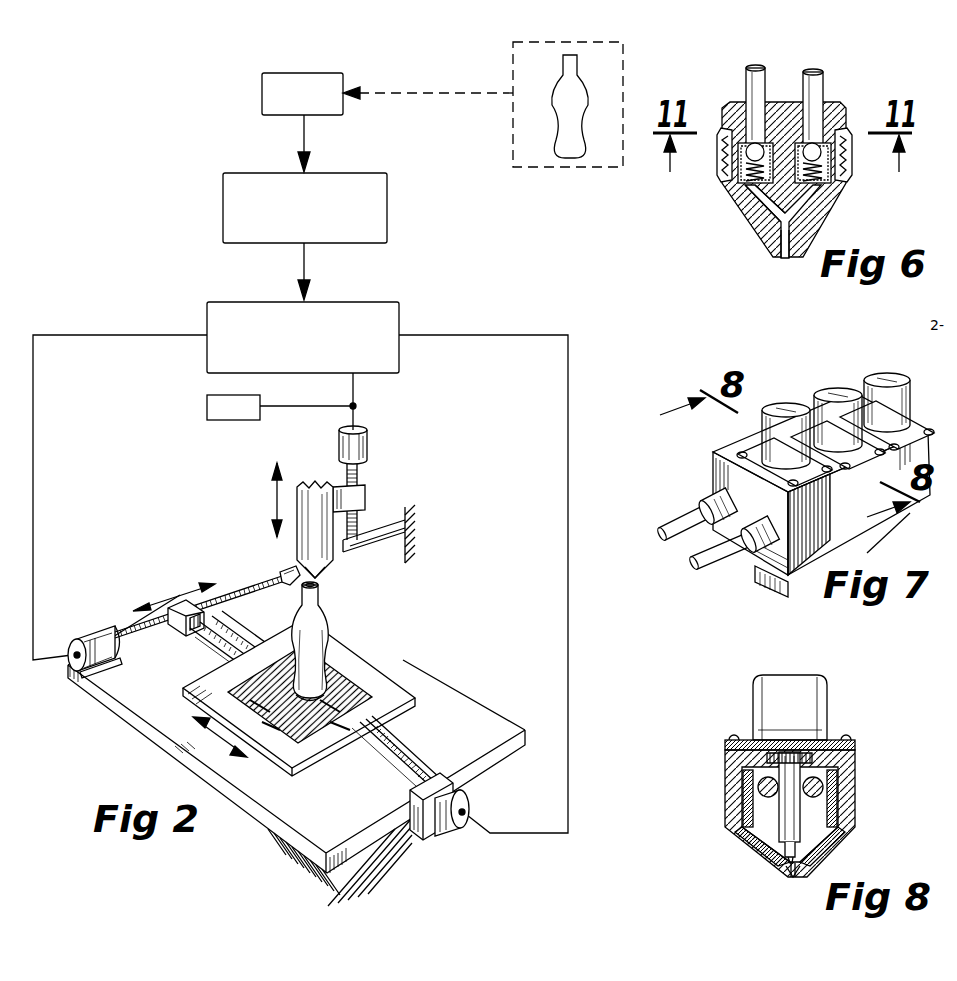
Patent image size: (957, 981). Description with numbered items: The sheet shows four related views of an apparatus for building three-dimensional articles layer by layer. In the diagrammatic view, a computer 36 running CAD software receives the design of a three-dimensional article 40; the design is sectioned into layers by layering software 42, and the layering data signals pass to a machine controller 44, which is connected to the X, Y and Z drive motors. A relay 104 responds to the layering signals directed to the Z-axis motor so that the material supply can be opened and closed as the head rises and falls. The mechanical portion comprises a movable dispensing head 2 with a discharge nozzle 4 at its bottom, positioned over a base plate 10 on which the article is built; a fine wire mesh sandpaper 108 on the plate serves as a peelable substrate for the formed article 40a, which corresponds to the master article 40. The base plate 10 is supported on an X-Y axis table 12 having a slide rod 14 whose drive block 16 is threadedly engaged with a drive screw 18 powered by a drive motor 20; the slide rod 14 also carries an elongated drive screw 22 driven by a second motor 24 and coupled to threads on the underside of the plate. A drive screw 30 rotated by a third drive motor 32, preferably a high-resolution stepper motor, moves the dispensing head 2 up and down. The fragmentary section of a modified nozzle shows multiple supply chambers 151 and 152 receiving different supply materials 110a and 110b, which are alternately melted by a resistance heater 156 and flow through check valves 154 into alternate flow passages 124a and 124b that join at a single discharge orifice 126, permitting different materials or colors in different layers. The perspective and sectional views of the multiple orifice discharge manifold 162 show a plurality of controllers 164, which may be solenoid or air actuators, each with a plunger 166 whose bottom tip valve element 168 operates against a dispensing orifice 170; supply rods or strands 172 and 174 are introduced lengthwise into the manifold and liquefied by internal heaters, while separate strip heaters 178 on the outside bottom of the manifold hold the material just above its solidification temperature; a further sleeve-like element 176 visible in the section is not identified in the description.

In FIG. 2, the dispensing head 2 is at (280, 548).
In FIG. 2, the discharge nozzle 4 is at (322, 566).
In FIG. 2, the base plate 10 is at (385, 686).
In FIG. 2, the X-Y axis table 12 is at (157, 733).
In FIG. 2, the slide rod 14 is at (205, 650).
In FIG. 2, the drive block 16 is at (200, 606).
In FIG. 2, the drive screw 18 is at (136, 636).
In FIG. 2, the drive motor 20 is at (86, 640).
In FIG. 2, the elongated drive screw 22 is at (397, 764).
In FIG. 2, the second motor 24 is at (457, 830).
In FIG. 2, the drive screw 30 is at (358, 476).
In FIG. 2, the third drive motor 32 is at (368, 447).
In FIG. 2, the computer 36 is at (262, 80).
In FIG. 2, the three-dimensional article 40 is at (562, 68).
In FIG. 2, the formed article 40a is at (320, 600).
In FIG. 2, the layering software 42 is at (223, 199).
In FIG. 2, the machine controller 44 is at (216, 302).
In FIG. 2, the relay 104 is at (207, 408).
In FIG. 2, the wire mesh sandpaper 108 is at (350, 692).
In FIG. 6, the supply material 110a is at (812, 74).
In FIG. 6, the supply material 110b is at (755, 68).
In FIG. 6, the flow passage 124a is at (805, 200).
In FIG. 6, the flow passage 124b is at (765, 215).
In FIG. 6, the discharge orifice 126 is at (786, 258).
In FIG. 6, the supply chamber 151 is at (750, 102).
In FIG. 6, the supply chamber 152 is at (812, 106).
In FIG. 6, the check valves 154 is at (742, 186).
In FIG. 6, the resistance heater 156 is at (715, 150).
In FIG. 7, the multiple orifice discharge manifold 162 is at (692, 466).
In FIG. 8, the multiple orifice discharge manifold 162 is at (704, 760).
In FIG. 7, the controllers 164 is at (880, 390).
In FIG. 8, the controllers 164 is at (808, 672).
In FIG. 8, the plunger 166 is at (786, 833).
In FIG. 8, the bottom tip valve element 168 is at (789, 869).
In FIG. 8, the dispensing orifice 170 is at (793, 877).
In FIG. 7, the material supply rod 172 is at (678, 520).
In FIG. 8, the material supply rod 172 is at (758, 786).
In FIG. 7, the material supply rod 174 is at (714, 560).
In FIG. 8, the material supply rod 174 is at (816, 774).
In FIG. 8, the sleeve / liner 176 is at (745, 812).
In FIG. 7, the strip heaters 178 is at (740, 572).
In FIG. 8, the strip heaters 178 is at (767, 850).